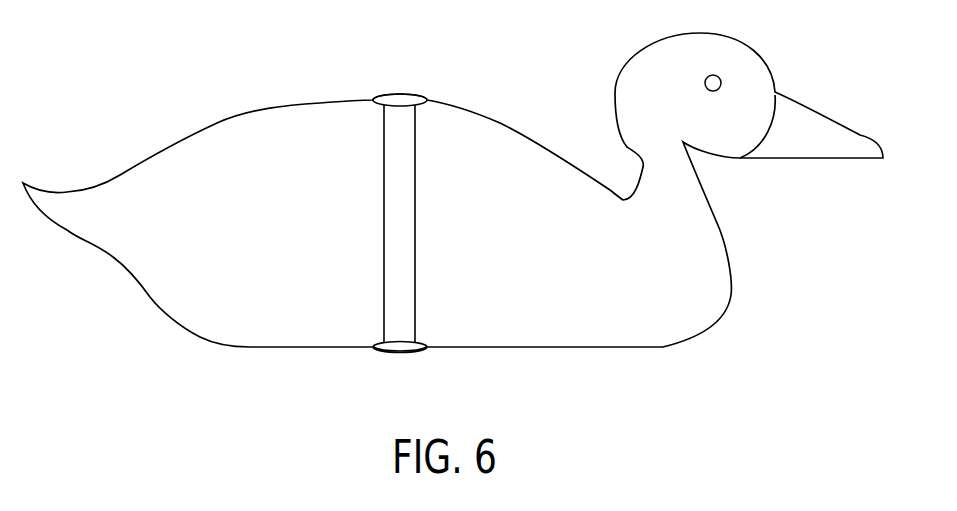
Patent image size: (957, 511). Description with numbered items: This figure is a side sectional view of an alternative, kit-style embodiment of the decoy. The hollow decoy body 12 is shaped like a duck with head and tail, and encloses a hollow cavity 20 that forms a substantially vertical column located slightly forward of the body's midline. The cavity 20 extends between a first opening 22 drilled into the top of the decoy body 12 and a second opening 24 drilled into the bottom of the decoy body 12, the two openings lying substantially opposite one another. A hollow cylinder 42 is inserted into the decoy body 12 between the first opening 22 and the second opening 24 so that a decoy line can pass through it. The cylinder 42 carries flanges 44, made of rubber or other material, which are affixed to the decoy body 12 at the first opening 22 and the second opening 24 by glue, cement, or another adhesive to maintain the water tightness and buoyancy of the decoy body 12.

The decoy body 12 is at (708, 298).
The hollow cavity 20 is at (372, 224).
The first opening 22 is at (400, 97).
The second opening 24 is at (400, 345).
The hollow cylinder 42 is at (383, 252).
The flanges 44 is at (416, 225).